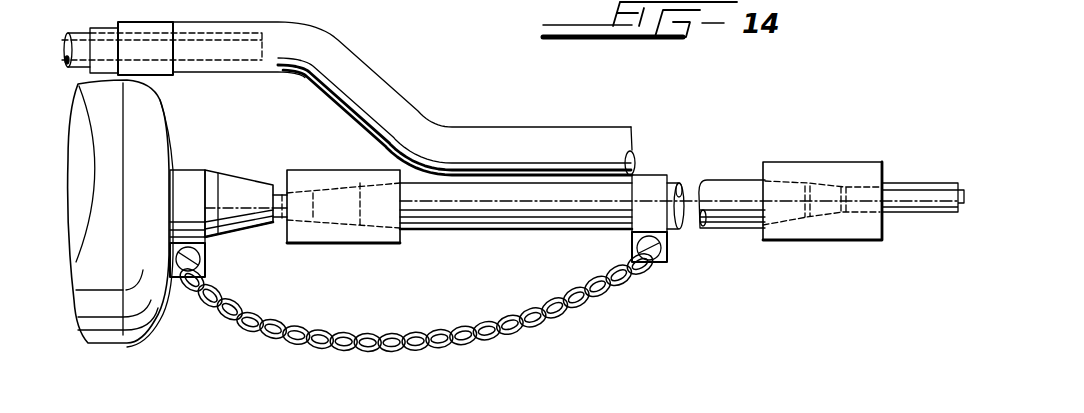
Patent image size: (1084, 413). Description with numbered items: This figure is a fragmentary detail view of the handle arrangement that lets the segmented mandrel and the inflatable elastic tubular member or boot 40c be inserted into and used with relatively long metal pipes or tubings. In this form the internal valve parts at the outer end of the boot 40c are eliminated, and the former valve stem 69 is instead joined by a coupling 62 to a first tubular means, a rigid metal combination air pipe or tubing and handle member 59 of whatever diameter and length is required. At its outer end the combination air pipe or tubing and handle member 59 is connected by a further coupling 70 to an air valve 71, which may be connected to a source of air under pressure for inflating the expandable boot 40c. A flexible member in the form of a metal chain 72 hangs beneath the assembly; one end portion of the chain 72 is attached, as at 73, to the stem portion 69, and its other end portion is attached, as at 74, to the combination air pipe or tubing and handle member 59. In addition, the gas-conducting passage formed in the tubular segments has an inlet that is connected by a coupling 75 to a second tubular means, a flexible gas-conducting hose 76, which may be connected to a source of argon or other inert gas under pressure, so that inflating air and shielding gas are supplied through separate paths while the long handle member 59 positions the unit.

The inflatable elastic tubular member or boot 40c is at (113, 346).
The combination air pipe or tubing and handle member 59 is at (442, 196).
The coupling 62 is at (370, 240).
The valve stem 69 is at (245, 180).
The coupling 70 is at (838, 233).
The air valve 71 is at (927, 200).
The metal chain 72 is at (318, 343).
The chain attachment 73 is at (177, 278).
The chain attachment 74 is at (643, 263).
The coupling 75 is at (150, 75).
The flexible gas-conducting hose 76 is at (368, 80).